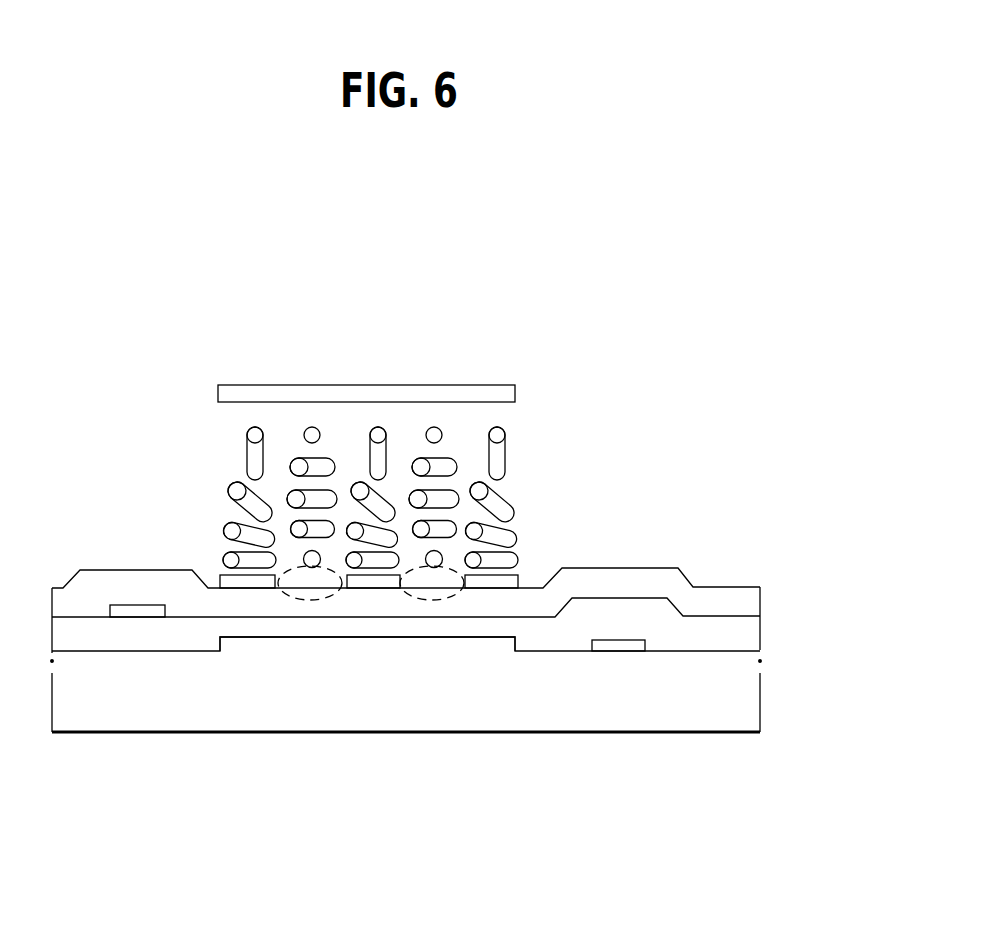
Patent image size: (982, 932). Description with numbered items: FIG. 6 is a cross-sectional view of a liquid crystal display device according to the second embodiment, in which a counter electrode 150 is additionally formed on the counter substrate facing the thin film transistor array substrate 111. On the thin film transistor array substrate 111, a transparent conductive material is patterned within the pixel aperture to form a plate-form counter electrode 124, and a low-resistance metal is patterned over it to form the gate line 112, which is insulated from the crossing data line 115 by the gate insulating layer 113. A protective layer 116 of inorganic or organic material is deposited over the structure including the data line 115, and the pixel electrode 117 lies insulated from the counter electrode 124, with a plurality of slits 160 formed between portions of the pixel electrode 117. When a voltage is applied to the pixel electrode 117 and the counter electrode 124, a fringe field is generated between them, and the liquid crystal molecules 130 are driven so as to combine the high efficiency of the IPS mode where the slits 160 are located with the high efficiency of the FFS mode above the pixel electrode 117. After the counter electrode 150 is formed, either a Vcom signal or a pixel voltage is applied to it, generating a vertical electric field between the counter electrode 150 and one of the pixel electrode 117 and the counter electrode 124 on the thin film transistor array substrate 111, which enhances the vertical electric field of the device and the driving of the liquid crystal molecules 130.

The thin film transistor array substrate 111 is at (748, 685).
The gate line 112 is at (618, 651).
The gate insulating layer 113 is at (748, 635).
The data line 115 is at (137, 605).
The protective layer 116 is at (748, 600).
The pixel electrode 117 is at (514, 583).
The counter electrode 124 is at (488, 651).
The liquid crystal molecules 130 is at (505, 450).
The counter electrode 150 is at (515, 393).
The slits 160 is at (430, 600).